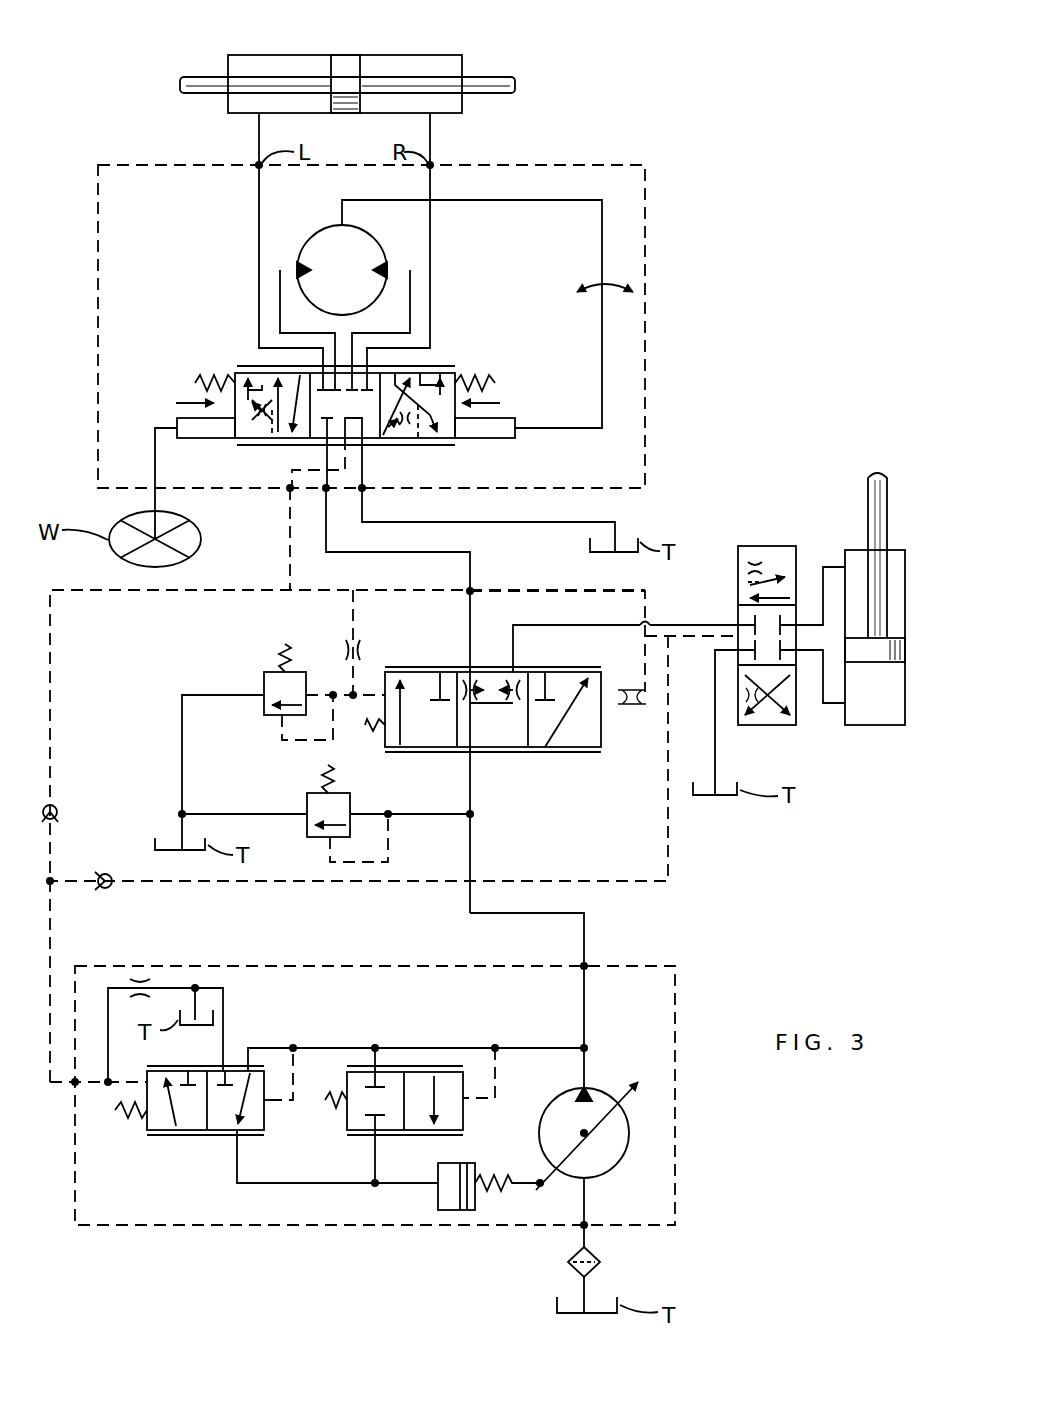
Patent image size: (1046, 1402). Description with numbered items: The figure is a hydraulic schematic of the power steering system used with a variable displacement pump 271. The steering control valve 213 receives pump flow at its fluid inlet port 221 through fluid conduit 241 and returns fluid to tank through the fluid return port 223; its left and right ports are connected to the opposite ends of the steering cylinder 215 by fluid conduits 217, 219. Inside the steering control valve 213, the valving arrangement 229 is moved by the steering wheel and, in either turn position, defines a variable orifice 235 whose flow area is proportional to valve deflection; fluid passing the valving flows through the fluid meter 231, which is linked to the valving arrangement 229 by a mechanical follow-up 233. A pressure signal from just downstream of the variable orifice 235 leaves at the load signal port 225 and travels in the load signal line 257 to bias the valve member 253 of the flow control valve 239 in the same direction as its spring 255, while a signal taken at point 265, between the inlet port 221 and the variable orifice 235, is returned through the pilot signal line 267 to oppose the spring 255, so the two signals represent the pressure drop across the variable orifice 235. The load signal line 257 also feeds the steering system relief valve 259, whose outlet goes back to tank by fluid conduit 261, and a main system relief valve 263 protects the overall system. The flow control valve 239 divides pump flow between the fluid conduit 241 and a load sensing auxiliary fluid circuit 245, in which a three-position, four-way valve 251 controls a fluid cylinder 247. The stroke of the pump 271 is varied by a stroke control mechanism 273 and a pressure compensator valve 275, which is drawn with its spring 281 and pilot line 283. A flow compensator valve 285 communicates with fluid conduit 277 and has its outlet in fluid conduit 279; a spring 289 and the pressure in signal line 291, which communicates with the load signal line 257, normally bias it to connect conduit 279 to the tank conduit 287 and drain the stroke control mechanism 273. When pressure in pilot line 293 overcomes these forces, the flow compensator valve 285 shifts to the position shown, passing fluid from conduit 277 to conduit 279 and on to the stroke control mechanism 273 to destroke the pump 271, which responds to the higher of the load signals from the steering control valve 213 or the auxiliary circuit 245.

The steering cylinder 215 is at (353, 44).
The fluid conduit 217 is at (257, 133).
The fluid conduit 219 is at (432, 133).
The steering control valve 213 is at (680, 268).
The fluid meter 231 is at (368, 246).
The mechanical follow-up 233 is at (600, 228).
The valving arrangement 229 is at (490, 352).
The variable orifice 235 is at (280, 413).
The load signal port 225 is at (288, 492).
The fluid inlet port 221 is at (330, 506).
The fluid return port 223 is at (366, 492).
The fluid conduit 241 is at (445, 556).
The point 265 is at (476, 592).
The load signal line 257 is at (356, 617).
The steering system relief valve 259 is at (262, 675).
The signal line 291 is at (52, 684).
The fluid conduit 261 is at (182, 770).
The main system relief valve 263 is at (304, 800).
The spring 255 is at (368, 735).
The flow control valve 239 is at (483, 735).
The valve member 253 is at (600, 724).
The pilot signal line 267 is at (645, 668).
The auxiliary fluid circuit 245 is at (778, 622).
The three-position, four-way valve 251 is at (760, 727).
The fluid cylinder 247 is at (862, 727).
The conduit 287 is at (228, 1002).
The fluid conduit 277 is at (465, 1046).
The pilot line 283 is at (498, 1072).
The variable displacement pump 271 is at (608, 1085).
The spring 289 is at (125, 1116).
The flow compensator valve 285 is at (181, 1134).
The pilot line 293 is at (272, 1104).
The spring 281 is at (322, 1104).
The pressure compensator valve 275 is at (378, 1109).
The fluid conduit 279 is at (374, 1186).
The stroke control mechanism 273 is at (468, 1160).